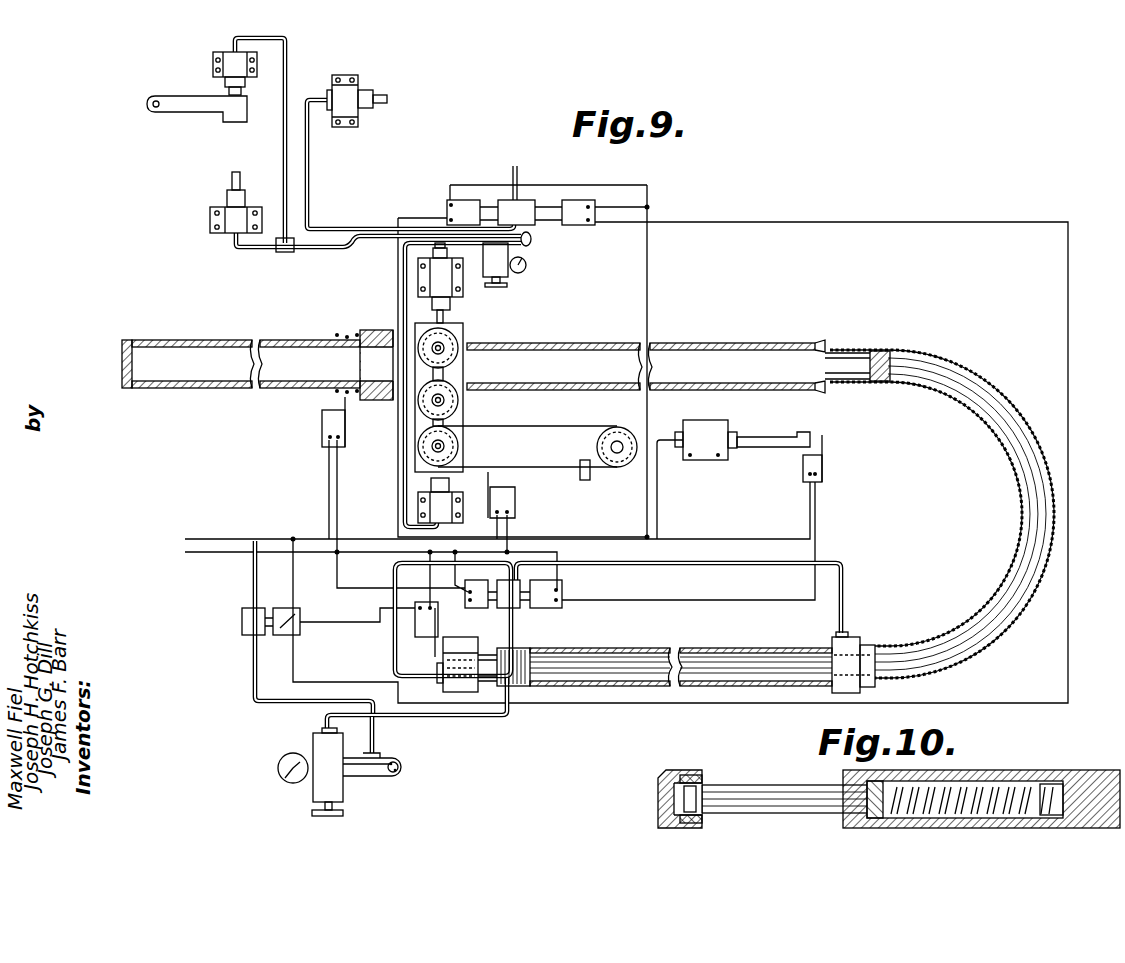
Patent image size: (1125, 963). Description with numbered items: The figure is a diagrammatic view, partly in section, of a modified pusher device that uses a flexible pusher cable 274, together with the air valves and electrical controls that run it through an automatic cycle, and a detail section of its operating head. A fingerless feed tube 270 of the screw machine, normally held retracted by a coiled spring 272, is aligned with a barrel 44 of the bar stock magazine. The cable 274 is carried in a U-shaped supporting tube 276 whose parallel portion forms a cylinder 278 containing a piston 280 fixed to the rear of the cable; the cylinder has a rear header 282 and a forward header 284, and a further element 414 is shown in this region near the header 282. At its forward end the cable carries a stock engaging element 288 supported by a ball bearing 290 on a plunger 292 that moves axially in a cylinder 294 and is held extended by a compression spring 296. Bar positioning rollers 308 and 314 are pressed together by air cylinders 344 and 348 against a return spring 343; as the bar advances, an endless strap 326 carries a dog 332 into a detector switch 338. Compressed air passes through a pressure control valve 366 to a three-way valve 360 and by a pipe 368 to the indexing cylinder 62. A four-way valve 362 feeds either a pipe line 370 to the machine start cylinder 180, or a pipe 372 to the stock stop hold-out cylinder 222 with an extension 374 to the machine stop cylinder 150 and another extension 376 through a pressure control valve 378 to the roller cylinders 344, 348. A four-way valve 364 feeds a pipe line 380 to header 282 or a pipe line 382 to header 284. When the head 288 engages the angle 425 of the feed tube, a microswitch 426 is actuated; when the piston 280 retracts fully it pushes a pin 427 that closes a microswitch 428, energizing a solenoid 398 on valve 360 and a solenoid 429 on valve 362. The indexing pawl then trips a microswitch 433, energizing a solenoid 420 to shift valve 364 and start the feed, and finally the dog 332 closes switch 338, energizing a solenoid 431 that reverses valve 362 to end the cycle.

In FIG. 9, the barrel 44 is at (710, 345).
In FIG. 9, the compressed air indexing cylinder 62 is at (715, 432).
In FIG. 9, the machine stop compressed air cylinder 150 is at (222, 65).
In FIG. 9, the machine start compressed air cylinder 180 is at (351, 97).
In FIG. 9, the stock stop hold-out compressed air cylinder 222 is at (212, 215).
In FIG. 9, the feed tube 270 is at (192, 341).
In FIG. 9, the coiled spring 272 is at (333, 334).
In FIG. 9, the flexible pusher cable 274 is at (937, 370).
In FIG. 9, the supporting sheath or tube 276 is at (1018, 475).
In FIG. 9, the cylinder 278 is at (613, 686).
In FIG. 9, the piston 280 is at (517, 678).
In FIG. 9, the header 282 is at (458, 688).
In FIG. 9, the header 284 is at (848, 660).
In FIG. 10, the stock engaging element 288 is at (660, 800).
In FIG. 10, the ball bearing 290 is at (699, 776).
In FIG. 10, the plunger 292 is at (780, 803).
In FIG. 10, the cylinder 294 is at (857, 779).
In FIG. 10, the compression spring 296 is at (985, 786).
In FIG. 9, the roller 308 is at (450, 340).
In FIG. 9, the roller 314 is at (462, 405).
In FIG. 9, the endless strap 326 is at (512, 471).
In FIG. 9, the dog 332 is at (582, 474).
In FIG. 9, the detector switch 338 is at (515, 503).
In FIG. 9, the coiled compression spring 343 is at (446, 373).
In FIG. 9, the compressed air cylinder 344 is at (452, 284).
In FIG. 9, the compressed air cylinder 348 is at (437, 505).
In FIG. 9, the three-way spring return compressed air valve 360 is at (243, 618).
In FIG. 9, the four-way compressed air valve 362 is at (522, 210).
In FIG. 9, the four-way compressed air valve 364 is at (513, 601).
In FIG. 9, the air pressure control valve 366 is at (333, 783).
In FIG. 9, the pipe 368 is at (253, 570).
In FIG. 9, the pipe line 370 is at (369, 231).
In FIG. 9, the pipe 372 is at (381, 241).
In FIG. 9, the extension 374 is at (283, 144).
In FIG. 9, the extension 376 is at (533, 241).
In FIG. 9, the air pressure control valve 378 is at (505, 270).
In FIG. 9, the pipe line 380 is at (396, 570).
In FIG. 9, the pipe line 382 is at (732, 565).
In FIG. 9, the solenoid 398 is at (290, 622).
In FIG. 9, the cylinder head 414 is at (441, 639).
In FIG. 9, the solenoid 420 is at (564, 596).
In FIG. 9, the angle 425 is at (123, 363).
In FIG. 9, the microswitch 426 is at (322, 425).
In FIG. 9, the pin 427 is at (490, 684).
In FIG. 9, the microswitch 428 is at (420, 628).
In FIG. 9, the solenoid 429 is at (576, 217).
In FIG. 9, the solenoid 431 is at (467, 202).
In FIG. 9, the microswitch 433 is at (804, 468).